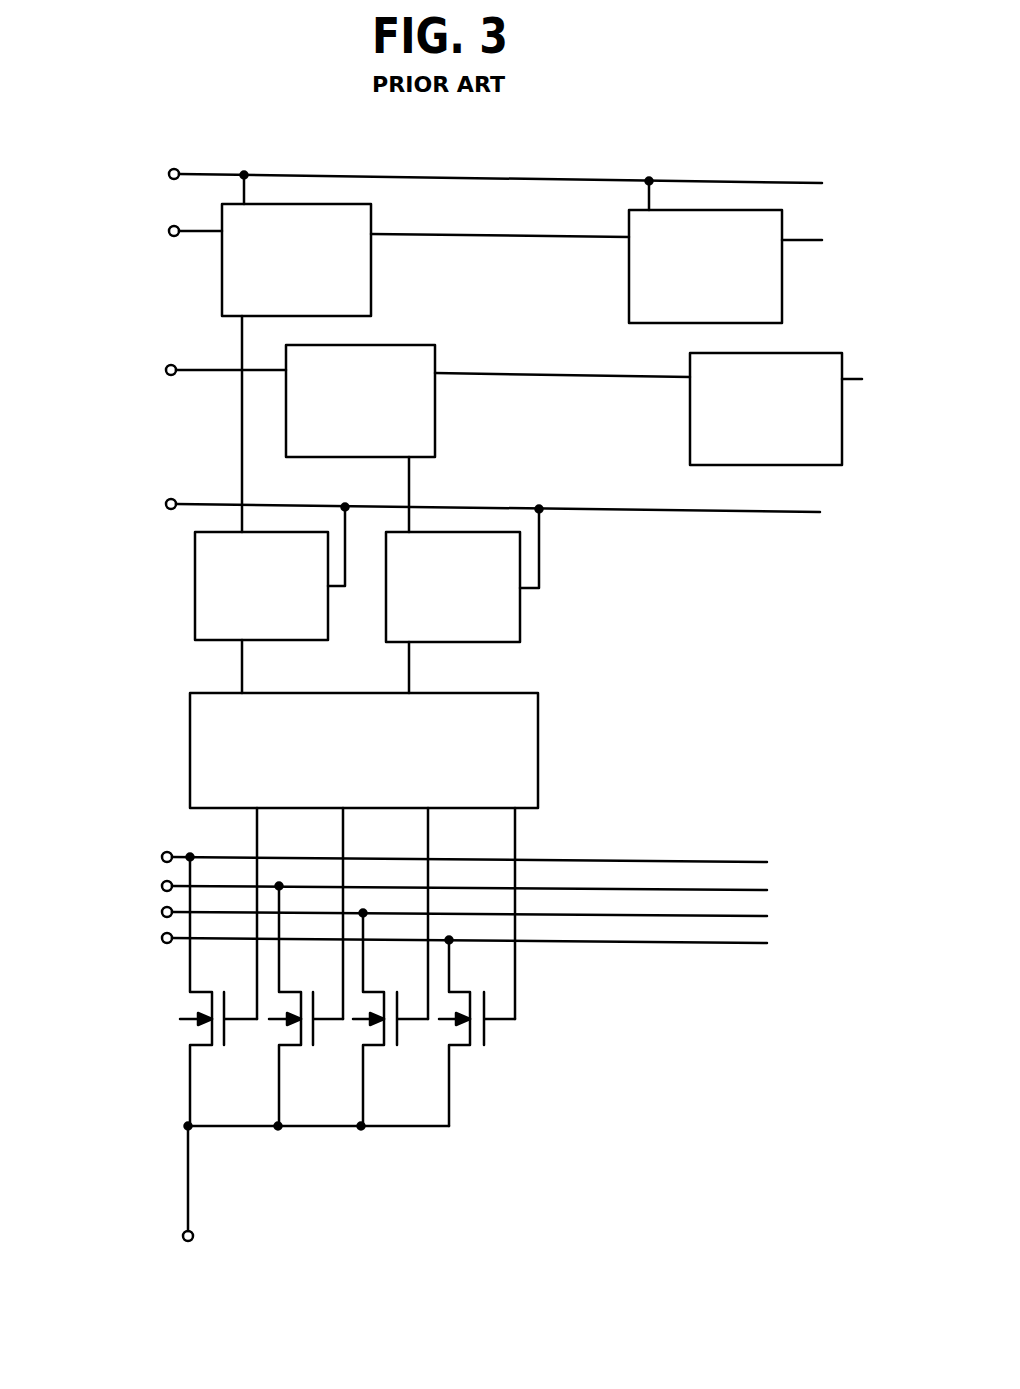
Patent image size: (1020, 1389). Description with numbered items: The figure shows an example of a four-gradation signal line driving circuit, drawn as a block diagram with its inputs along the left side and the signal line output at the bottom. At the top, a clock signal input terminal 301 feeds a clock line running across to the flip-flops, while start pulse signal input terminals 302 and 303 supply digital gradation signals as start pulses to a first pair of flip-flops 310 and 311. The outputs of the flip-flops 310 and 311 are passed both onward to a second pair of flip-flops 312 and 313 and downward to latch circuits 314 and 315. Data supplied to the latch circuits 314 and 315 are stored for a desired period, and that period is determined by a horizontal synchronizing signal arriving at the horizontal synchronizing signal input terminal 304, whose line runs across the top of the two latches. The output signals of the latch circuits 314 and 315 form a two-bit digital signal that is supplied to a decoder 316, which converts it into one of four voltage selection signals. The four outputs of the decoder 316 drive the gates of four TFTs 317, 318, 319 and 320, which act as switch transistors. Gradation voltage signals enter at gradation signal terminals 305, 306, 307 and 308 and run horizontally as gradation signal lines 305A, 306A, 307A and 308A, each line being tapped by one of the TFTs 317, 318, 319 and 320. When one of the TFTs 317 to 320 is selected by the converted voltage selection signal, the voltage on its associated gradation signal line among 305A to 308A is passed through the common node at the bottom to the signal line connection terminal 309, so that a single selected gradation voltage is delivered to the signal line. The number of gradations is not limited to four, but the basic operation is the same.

The clock signal input terminal 301 is at (169, 173).
The start pulse signal input terminal 302 is at (169, 230).
The start pulse signal input terminal 303 is at (166, 369).
The horizontal synchronizing signal input terminal 304 is at (166, 503).
The gradation signal terminal 305 is at (162, 856).
The gradation signal terminal 306 is at (162, 885).
The gradation signal terminal 307 is at (162, 911).
The gradation signal terminal 308 is at (162, 937).
The gradation signal line 305A is at (757, 864).
The gradation signal line 306A is at (757, 892).
The gradation signal line 307A is at (757, 918).
The gradation signal line 308A is at (757, 945).
The signal line connection terminal 309 is at (191, 1242).
The flip-flop 310 is at (372, 214).
The flip-flop 311 is at (436, 360).
The flip-flop 312 is at (783, 223).
The flip-flop 313 is at (843, 364).
The latch circuit 314 is at (280, 529).
The latch circuit 315 is at (470, 532).
The decoder 316 is at (539, 731).
The TFT 317 is at (216, 1048).
The TFT 318 is at (305, 1048).
The TFT 319 is at (388, 1048).
The TFT 320 is at (474, 1048).